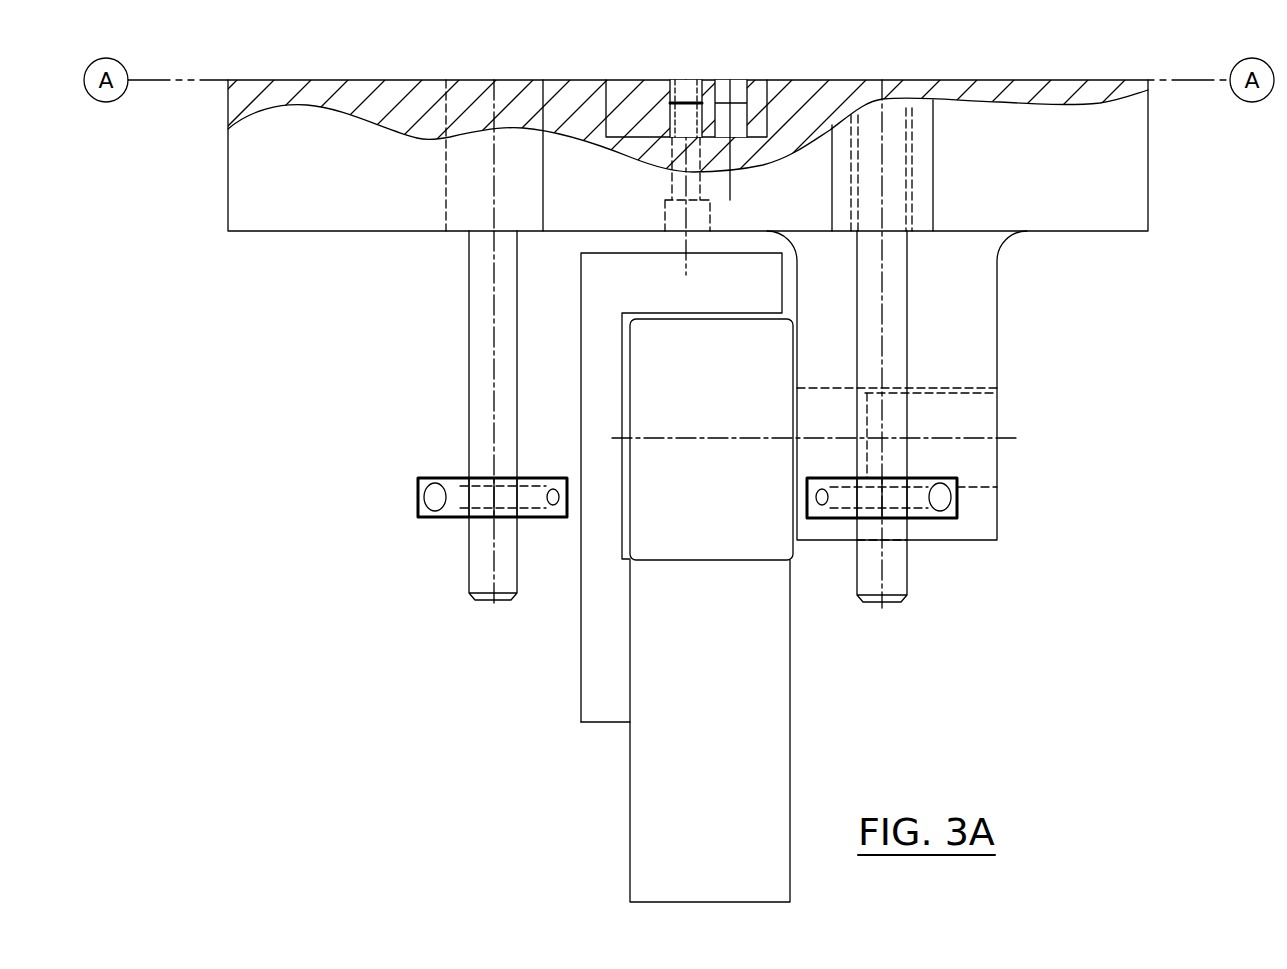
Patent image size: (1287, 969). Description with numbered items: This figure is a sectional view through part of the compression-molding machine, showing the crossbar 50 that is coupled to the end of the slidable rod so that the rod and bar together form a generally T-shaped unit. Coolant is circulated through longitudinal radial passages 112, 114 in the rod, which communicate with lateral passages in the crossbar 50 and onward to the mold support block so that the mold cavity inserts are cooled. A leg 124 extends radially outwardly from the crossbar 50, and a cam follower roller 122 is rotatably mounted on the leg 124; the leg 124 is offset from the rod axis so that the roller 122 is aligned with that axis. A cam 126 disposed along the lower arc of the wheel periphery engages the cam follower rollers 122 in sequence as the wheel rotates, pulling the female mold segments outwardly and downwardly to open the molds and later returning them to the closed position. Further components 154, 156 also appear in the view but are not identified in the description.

The crossbar 50 is at (1140, 178).
The longitudinal radial passage 112 is at (742, 93).
The longitudinal radial passage 114 is at (688, 92).
The cam follower roller 122 is at (651, 543).
The leg 124 is at (985, 310).
The cam 126 is at (645, 797).
The guide rod 154 is at (480, 572).
The retaining pin 156 is at (447, 510).